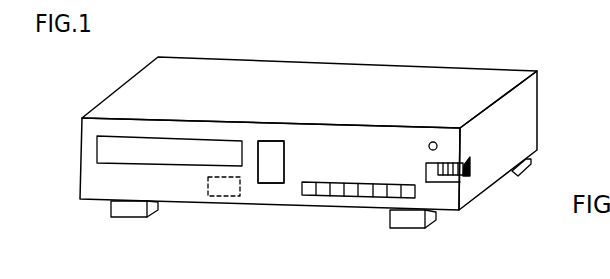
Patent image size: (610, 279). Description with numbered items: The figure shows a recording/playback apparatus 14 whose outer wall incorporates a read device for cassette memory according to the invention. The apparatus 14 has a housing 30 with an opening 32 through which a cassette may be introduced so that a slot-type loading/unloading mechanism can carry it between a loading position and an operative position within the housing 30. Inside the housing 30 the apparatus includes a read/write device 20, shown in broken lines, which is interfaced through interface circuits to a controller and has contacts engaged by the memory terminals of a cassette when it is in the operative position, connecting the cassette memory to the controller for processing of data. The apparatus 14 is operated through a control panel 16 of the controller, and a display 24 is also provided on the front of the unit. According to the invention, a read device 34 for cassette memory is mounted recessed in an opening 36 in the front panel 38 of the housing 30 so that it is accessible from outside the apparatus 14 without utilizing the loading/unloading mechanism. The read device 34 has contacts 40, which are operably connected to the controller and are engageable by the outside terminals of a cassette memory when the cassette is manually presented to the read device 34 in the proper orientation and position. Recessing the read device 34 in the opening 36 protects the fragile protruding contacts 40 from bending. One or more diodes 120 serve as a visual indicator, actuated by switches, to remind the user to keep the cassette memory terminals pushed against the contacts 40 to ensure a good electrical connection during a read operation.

The playback/recording apparatus 14 is at (541, 109).
The housing 30 is at (158, 88).
The opening 32 is at (112, 153).
The read/write device 20 is at (221, 197).
The front panel 38 is at (267, 195).
The display 24 is at (276, 150).
The control panel 16 is at (352, 190).
The diodes 120 is at (437, 146).
The opening 36 is at (448, 181).
The contacts 40 is at (438, 169).
The read device 34 is at (472, 170).